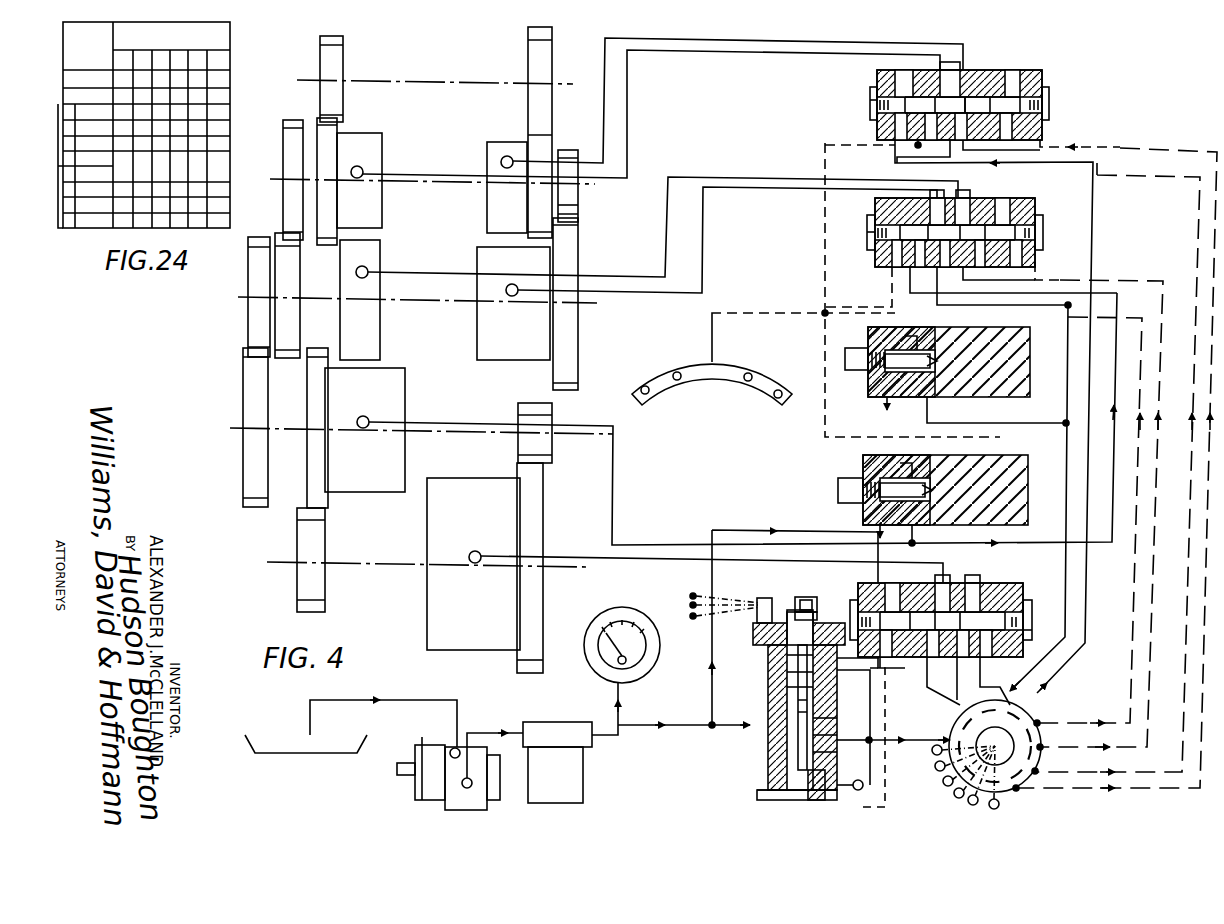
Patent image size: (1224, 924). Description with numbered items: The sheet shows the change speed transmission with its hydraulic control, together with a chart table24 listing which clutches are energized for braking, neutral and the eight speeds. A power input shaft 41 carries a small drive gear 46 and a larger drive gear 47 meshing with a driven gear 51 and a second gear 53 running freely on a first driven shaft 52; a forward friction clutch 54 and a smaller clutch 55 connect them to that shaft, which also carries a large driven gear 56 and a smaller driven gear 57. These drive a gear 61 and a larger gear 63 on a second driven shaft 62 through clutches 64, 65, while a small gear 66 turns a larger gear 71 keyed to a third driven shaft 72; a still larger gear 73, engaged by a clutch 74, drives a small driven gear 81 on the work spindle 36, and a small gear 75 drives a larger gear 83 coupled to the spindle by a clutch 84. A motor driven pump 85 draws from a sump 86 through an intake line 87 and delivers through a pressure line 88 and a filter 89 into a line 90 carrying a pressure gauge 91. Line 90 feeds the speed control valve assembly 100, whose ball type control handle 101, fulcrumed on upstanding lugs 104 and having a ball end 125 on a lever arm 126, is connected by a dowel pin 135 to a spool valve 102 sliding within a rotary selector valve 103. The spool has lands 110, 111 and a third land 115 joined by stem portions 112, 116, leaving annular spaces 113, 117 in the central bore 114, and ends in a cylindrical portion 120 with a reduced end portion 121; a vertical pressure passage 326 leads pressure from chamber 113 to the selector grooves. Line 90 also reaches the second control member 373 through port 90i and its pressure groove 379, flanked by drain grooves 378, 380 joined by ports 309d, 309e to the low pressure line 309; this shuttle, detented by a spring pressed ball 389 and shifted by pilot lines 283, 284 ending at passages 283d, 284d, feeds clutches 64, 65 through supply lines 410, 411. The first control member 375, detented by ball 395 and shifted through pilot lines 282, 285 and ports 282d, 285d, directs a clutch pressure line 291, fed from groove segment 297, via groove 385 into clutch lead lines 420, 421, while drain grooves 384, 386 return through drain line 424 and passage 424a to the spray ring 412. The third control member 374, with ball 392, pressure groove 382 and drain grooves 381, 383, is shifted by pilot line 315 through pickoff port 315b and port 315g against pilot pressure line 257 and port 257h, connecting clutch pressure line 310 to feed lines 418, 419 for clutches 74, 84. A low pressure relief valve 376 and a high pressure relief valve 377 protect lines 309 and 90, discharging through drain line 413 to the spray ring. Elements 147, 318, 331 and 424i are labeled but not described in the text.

In FIG. 24, the clutch engagement table table24 is at (144, 126).
In FIG. 4, the work spindle 36 is at (385, 565).
In FIG. 4, the power input shaft 41 is at (418, 81).
In FIG. 4, the small drive gear 46 is at (343, 50).
In FIG. 4, the larger drive gear 47 is at (530, 55).
In FIG. 4, the driven gear 51 is at (338, 128).
In FIG. 4, the first driven shaft 52 is at (430, 183).
In FIG. 4, the second gear 53 is at (555, 150).
In FIG. 4, the forward fluid pressure actuated friction clutch 54 is at (382, 150).
In FIG. 4, the smaller forward fluid pressure actuated friction clutch 55 is at (490, 150).
In FIG. 4, the large driven gear 56 is at (283, 142).
In FIG. 4, the smaller driven gear 57 is at (580, 208).
In FIG. 4, the gear 61 is at (277, 235).
In FIG. 4, the second driven shaft 62 is at (415, 301).
In FIG. 4, the larger gear 63 is at (580, 252).
In FIG. 4, the fluid pressure actuated clutch 64 is at (381, 256).
In FIG. 4, the fluid pressure actuated clutch 65 is at (478, 258).
In FIG. 4, the small gear 66 is at (250, 335).
In FIG. 4, the larger gear 71 is at (248, 382).
In FIG. 4, the third driven shaft 72 is at (412, 432).
In FIG. 4, the still larger gear 73 is at (308, 390).
In FIG. 4, the fluid pressure actuated clutch 74 is at (405, 395).
In FIG. 4, the small gear 75 is at (553, 415).
In FIG. 4, the small driven gear 81 is at (325, 536).
In FIG. 4, the larger gear 83 is at (543, 502).
In FIG. 4, the fluid pressure actuated clutch 84 is at (482, 478).
In FIG. 4, the motor driven pump 85 is at (415, 780).
In FIG. 4, the sump 86 is at (275, 755).
In FIG. 4, the intake line 87 is at (415, 700).
In FIG. 4, the pressure line 88 is at (500, 733).
In FIG. 4, the filter 89 is at (583, 775).
In FIG. 4, the clutch pressure line 90 is at (777, 531).
In FIG. 4, the pressure gauge 91 is at (640, 672).
In FIG. 4, the speed control valve assembly 100 is at (766, 703).
In FIG. 4, the ball type control handle 101 is at (700, 590).
In FIG. 4, the spool valve 102 is at (790, 710).
In FIG. 4, the rotary selector valve 103 is at (768, 780).
In FIG. 4, the upstanding lugs 104 is at (772, 601).
In FIG. 4, the land 110 is at (770, 688).
In FIG. 4, the land 111 is at (838, 752).
In FIG. 4, the stem portion 112 is at (838, 716).
In FIG. 4, the annular space 113 is at (838, 735).
In FIG. 4, the central bore 114 is at (857, 651).
In FIG. 4, the third land 115 is at (800, 628).
In FIG. 4, the stem portion 116 is at (770, 672).
In FIG. 4, the annular space 117 is at (770, 656).
In FIG. 4, the cylindrical portion 120 is at (818, 616).
In FIG. 4, the reduced end portion 121 is at (817, 610).
In FIG. 4, the ball end 125 is at (700, 618).
In FIG. 4, the lever arm 126 is at (716, 608).
In FIG. 4, the dowel pin 135 is at (808, 594).
In FIG. 4, the selector lever 147 is at (760, 605).
In FIG. 4, the pilot pressure line 257 is at (899, 667).
In FIG. 4, the port 257h is at (1040, 627).
In FIG. 4, the pilot pressure line 282 is at (1198, 258).
In FIG. 4, the port 282d is at (860, 155).
In FIG. 4, the pilot line 283 is at (1120, 317).
In FIG. 4, the passage 283d is at (858, 287).
In FIG. 4, the pilot line 284 is at (1110, 280).
In FIG. 4, the passage 284d is at (1057, 267).
In FIG. 4, the pilot pressure line 285 is at (1110, 147).
In FIG. 4, the port 285d is at (1080, 135).
In FIG. 4, the clutch pressure line 291 is at (1094, 206).
In FIG. 4, the groove segment 297 is at (1001, 147).
In FIG. 4, the low pressure line 309 is at (1067, 320).
In FIG. 4, the port 309d is at (977, 287).
In FIG. 4, the port 309e is at (999, 276).
In FIG. 4, the clutch pressure line 310 is at (973, 724).
In FIG. 4, the pilot line 315 is at (871, 721).
In FIG. 4, the pickoff port 315b is at (824, 793).
In FIG. 4, the port 315g is at (892, 655).
In FIG. 4, the passage 318 is at (853, 727).
In FIG. 4, the vertical pressure passage 326 is at (870, 722).
In FIG. 4, the orifice 331 is at (855, 777).
In FIG. 4, the second clutch control member 373 is at (955, 232).
In FIG. 4, the third clutch control member 374 is at (1006, 615).
In FIG. 4, the first clutch control member 375 is at (959, 105).
In FIG. 4, the low pressure relief valve 376 is at (910, 352).
In FIG. 4, the high pressure relief valve 377 is at (910, 478).
In FIG. 4, the clutch pressure line groove 378 is at (867, 260).
In FIG. 4, the clutch pressure line groove 379 is at (950, 198).
In FIG. 4, the clutch pressure line groove 380 is at (975, 207).
In FIG. 4, the clutch pressure line groove 381 is at (985, 585).
In FIG. 4, the clutch pressure line groove 382 is at (952, 568).
In FIG. 4, the clutch pressure line groove 383 is at (935, 583).
In FIG. 4, the clutch pressure line groove 384 is at (870, 118).
In FIG. 4, the clutch pressure line groove 385 is at (960, 72).
In FIG. 4, the clutch pressure line groove 386 is at (982, 96).
In FIG. 4, the spring pressed ball 389 is at (1036, 220).
In FIG. 4, the spring pressed ball 392 is at (873, 615).
In FIG. 4, the spring pressed ball 395 is at (1043, 90).
In FIG. 4, the supply line 410 is at (700, 178).
In FIG. 4, the supply line 411 is at (705, 215).
In FIG. 4, the spray ring 412 is at (720, 380).
In FIG. 4, the drain line 413 is at (825, 432).
In FIG. 4, the lead line 418 is at (485, 422).
In FIG. 4, the feed line 419 is at (605, 566).
In FIG. 4, the clutch lead line 420 is at (628, 75).
In FIG. 4, the clutch lead line 421 is at (604, 62).
In FIG. 4, the drain line 424 is at (805, 245).
In FIG. 4, the interconnecting passage 424a is at (986, 681).
In FIG. 4, the drain line 424i is at (932, 681).
In FIG. 4, the port 90i is at (996, 287).